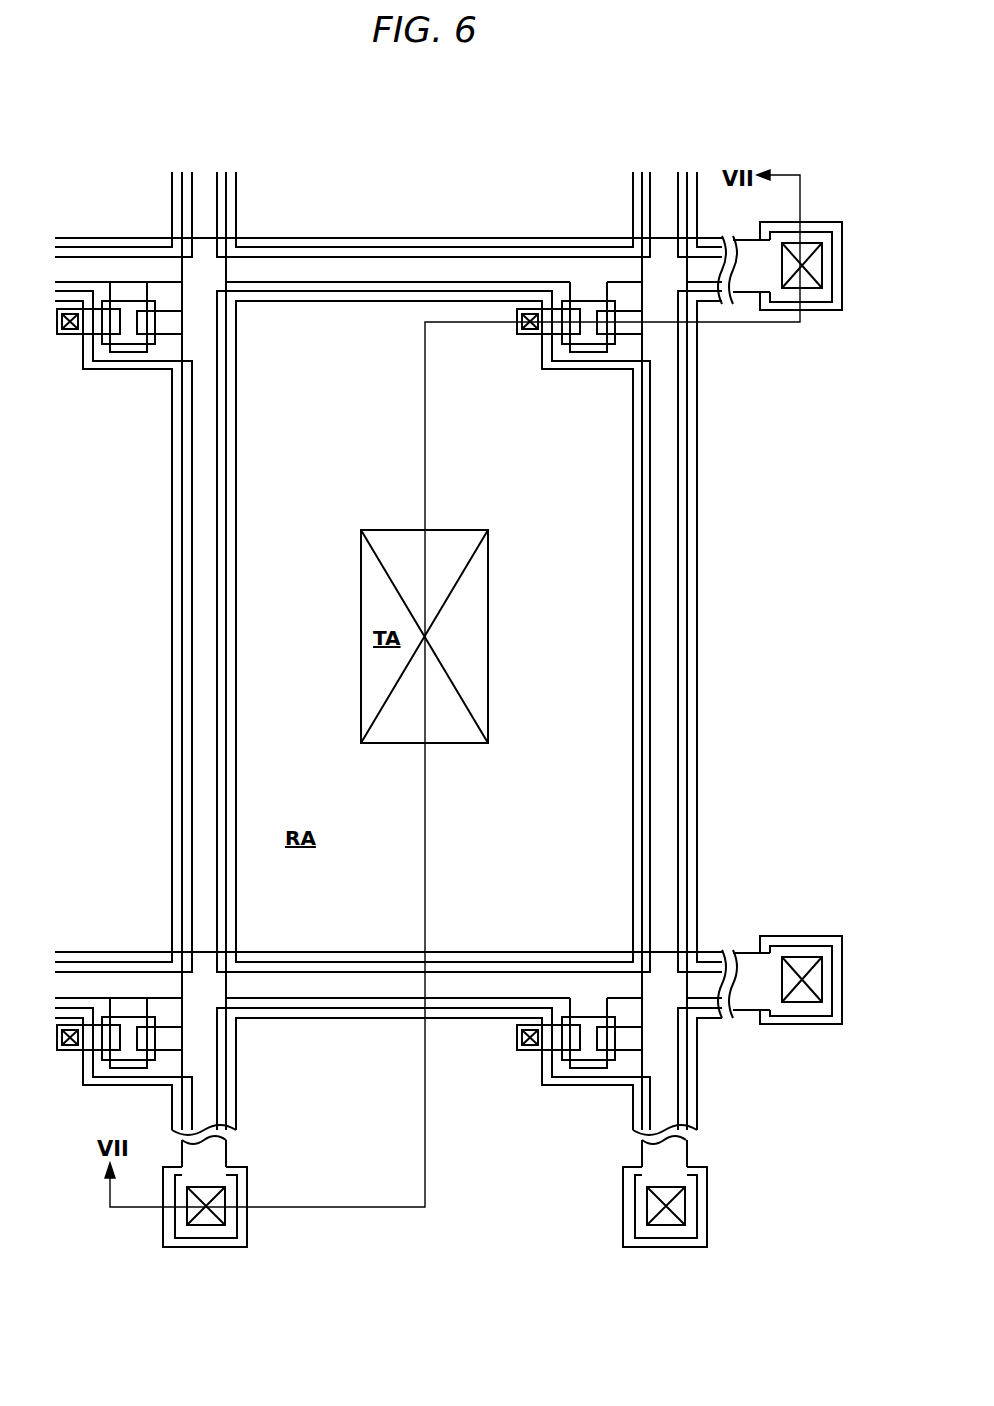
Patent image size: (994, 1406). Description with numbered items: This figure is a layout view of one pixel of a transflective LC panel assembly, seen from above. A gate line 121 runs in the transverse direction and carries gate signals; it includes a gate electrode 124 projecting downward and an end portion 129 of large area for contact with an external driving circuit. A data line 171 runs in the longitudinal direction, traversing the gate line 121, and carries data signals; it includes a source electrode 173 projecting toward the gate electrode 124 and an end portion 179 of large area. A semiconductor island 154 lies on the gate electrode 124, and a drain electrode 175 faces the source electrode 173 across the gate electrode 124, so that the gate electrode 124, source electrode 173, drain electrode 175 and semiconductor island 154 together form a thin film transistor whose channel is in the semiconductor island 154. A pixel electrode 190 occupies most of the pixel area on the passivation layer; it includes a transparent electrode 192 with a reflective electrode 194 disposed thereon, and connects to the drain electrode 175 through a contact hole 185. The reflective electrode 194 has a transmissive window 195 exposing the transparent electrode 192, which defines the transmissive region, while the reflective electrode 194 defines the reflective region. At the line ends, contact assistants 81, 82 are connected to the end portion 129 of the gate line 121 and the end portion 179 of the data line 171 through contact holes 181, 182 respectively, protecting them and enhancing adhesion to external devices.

The gate line 121 is at (330, 282).
The gate electrode 124 is at (607, 283).
The end portion of gate line 129 is at (838, 288).
The semiconductor island 154 is at (578, 300).
The data line 171 is at (687, 723).
The source electrode 173 is at (628, 335).
The drain electrode 175 is at (527, 307).
The end portion of data line 179 is at (190, 1243).
The contact hole 181 is at (822, 258).
The contact hole 182 is at (212, 1227).
The contact hole 185 is at (527, 335).
The pixel electrode 190 is at (438, 651).
The transparent electrode 192 is at (633, 580).
The reflective electrode 194 is at (650, 612).
The transmissive window 195 is at (387, 530).
The contact assistant 81 is at (833, 222).
The contact assistant 82 is at (247, 1175).